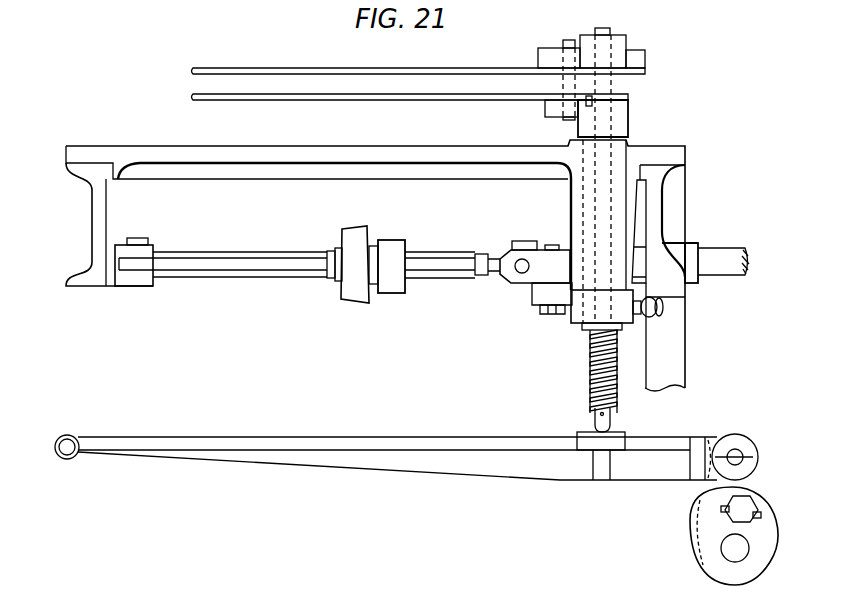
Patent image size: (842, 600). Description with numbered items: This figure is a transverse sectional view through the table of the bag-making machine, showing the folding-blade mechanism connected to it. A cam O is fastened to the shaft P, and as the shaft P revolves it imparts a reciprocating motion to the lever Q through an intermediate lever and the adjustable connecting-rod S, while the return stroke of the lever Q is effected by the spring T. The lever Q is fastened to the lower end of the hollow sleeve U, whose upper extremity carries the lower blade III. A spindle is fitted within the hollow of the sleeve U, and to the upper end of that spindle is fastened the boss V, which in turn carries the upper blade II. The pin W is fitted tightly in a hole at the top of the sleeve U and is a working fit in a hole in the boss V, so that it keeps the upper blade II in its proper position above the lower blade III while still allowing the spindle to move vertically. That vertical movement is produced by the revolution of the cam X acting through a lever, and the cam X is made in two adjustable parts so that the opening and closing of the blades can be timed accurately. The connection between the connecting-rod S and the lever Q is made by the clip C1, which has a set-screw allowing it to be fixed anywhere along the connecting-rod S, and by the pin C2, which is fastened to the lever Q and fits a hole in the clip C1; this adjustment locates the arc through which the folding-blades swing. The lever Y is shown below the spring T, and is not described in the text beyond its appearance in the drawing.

The upper blade II is at (498, 67).
The lower blade III is at (428, 101).
The pin W is at (567, 40).
The hollow sleeve U is at (603, 28).
The boss V is at (623, 43).
The cam O is at (352, 232).
The clip C1 is at (535, 262).
The adjustable connecting-rod S is at (518, 273).
The pin C2 is at (545, 286).
The lever Q is at (579, 312).
The spring T is at (590, 384).
The shaft P is at (717, 263).
The lever Y is at (492, 433).
The cam X is at (753, 503).